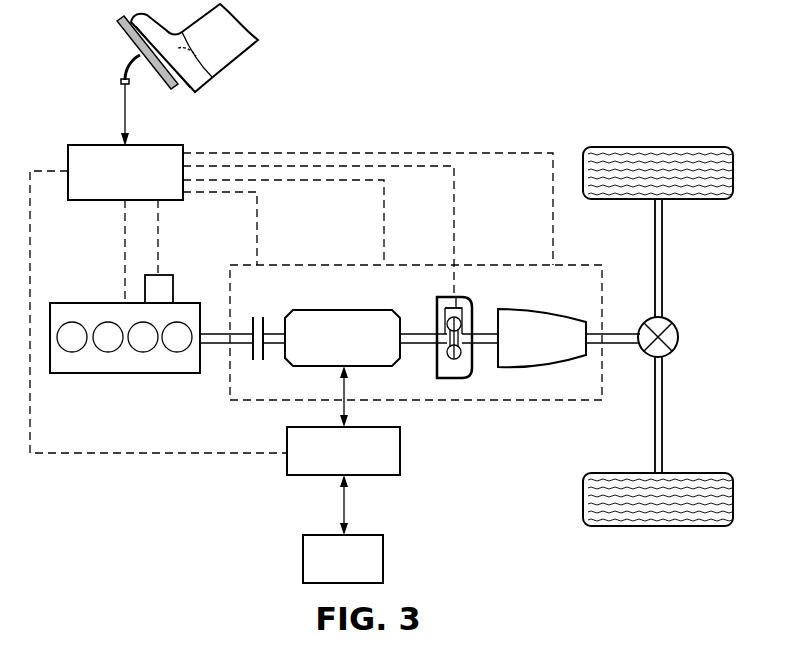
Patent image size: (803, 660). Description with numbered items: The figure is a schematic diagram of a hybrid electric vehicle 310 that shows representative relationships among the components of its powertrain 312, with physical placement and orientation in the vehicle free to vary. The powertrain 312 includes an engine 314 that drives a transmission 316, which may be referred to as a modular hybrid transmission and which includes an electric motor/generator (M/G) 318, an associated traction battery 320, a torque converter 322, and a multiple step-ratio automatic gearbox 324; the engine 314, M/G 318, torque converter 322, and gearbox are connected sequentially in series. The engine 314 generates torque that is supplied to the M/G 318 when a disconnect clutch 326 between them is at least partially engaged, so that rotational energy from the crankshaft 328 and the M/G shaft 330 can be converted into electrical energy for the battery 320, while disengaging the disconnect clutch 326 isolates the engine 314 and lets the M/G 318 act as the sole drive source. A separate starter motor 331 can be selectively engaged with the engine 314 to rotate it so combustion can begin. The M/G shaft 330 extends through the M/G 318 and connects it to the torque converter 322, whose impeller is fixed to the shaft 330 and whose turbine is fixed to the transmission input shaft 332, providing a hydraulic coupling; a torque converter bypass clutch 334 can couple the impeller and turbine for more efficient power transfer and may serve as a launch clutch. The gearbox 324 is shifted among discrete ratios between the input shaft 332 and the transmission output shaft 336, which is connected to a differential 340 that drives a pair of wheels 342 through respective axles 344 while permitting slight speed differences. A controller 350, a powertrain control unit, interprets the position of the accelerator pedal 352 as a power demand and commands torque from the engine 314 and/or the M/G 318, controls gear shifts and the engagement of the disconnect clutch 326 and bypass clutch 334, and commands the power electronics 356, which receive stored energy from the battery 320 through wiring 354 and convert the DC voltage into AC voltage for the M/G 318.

The hybrid electric vehicle 310 is at (534, 82).
The powertrain 312 is at (211, 489).
The engine 314 is at (92, 303).
The transmission 316 is at (427, 265).
The electric motor/generator (M/G) 318 is at (345, 310).
The traction battery 320 is at (303, 560).
The torque converter 322 is at (452, 379).
The gearbox 324 is at (540, 365).
The disconnect clutch 326 is at (270, 360).
The crankshaft 328 is at (225, 333).
The M/G shaft 330 is at (272, 330).
The starter motor 331 is at (165, 275).
The transmission input shaft 332 is at (481, 332).
The torque converter bypass clutch 334 is at (456, 297).
The transmission output shaft 336 is at (612, 330).
The differential 340 is at (680, 337).
The wheels 342 is at (660, 147).
The axles 344 is at (664, 262).
The controller 350 is at (95, 145).
The accelerator pedal 352 is at (128, 48).
The wiring 354 is at (340, 508).
The power electronics 356 is at (400, 450).